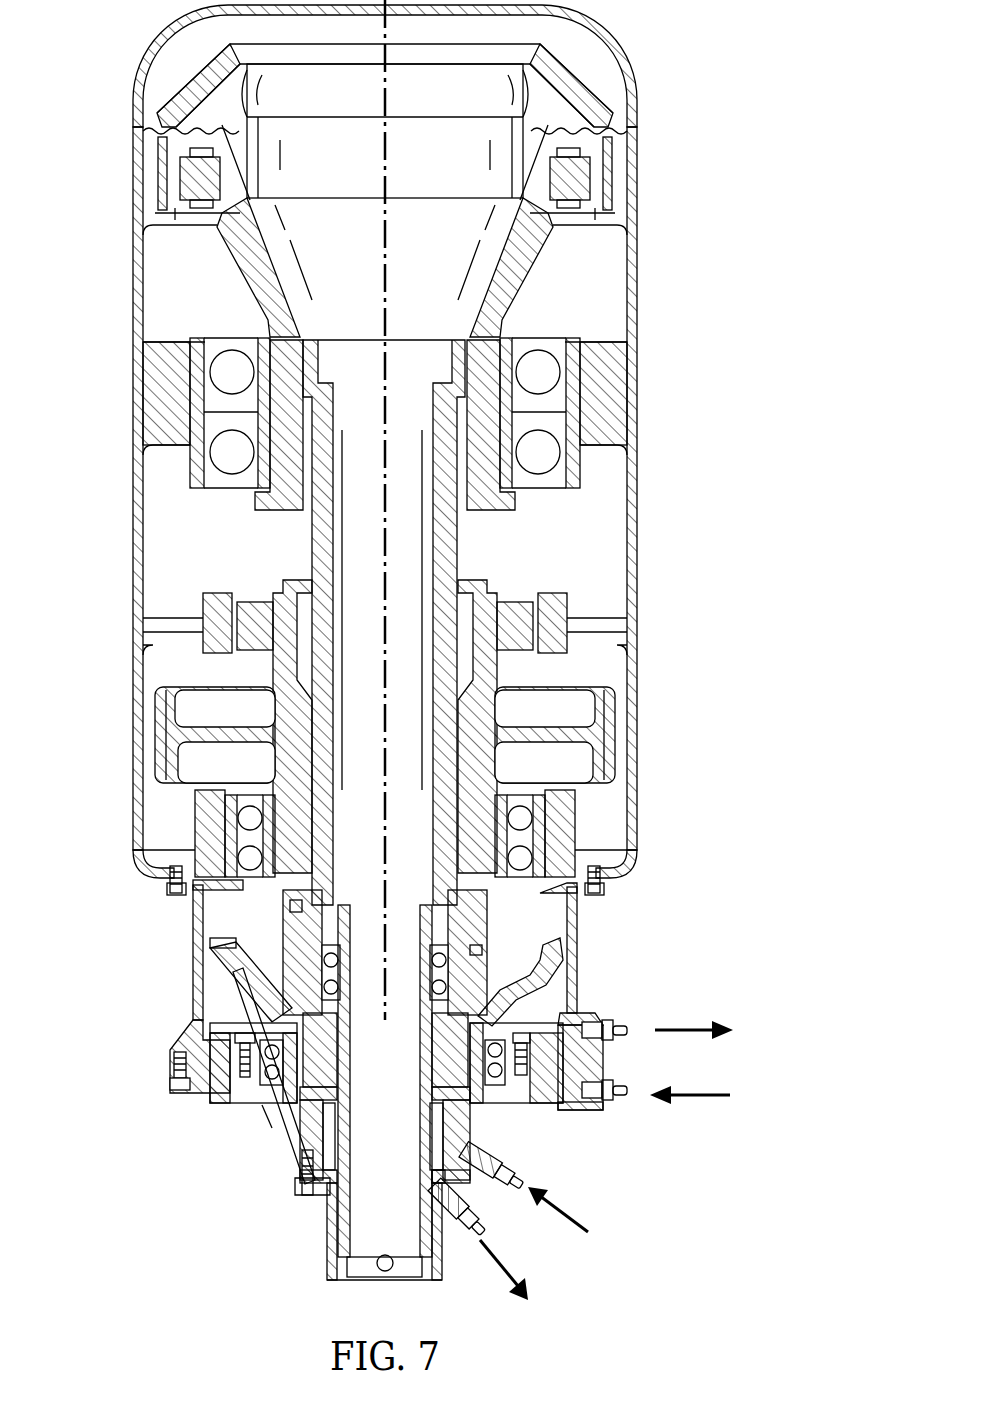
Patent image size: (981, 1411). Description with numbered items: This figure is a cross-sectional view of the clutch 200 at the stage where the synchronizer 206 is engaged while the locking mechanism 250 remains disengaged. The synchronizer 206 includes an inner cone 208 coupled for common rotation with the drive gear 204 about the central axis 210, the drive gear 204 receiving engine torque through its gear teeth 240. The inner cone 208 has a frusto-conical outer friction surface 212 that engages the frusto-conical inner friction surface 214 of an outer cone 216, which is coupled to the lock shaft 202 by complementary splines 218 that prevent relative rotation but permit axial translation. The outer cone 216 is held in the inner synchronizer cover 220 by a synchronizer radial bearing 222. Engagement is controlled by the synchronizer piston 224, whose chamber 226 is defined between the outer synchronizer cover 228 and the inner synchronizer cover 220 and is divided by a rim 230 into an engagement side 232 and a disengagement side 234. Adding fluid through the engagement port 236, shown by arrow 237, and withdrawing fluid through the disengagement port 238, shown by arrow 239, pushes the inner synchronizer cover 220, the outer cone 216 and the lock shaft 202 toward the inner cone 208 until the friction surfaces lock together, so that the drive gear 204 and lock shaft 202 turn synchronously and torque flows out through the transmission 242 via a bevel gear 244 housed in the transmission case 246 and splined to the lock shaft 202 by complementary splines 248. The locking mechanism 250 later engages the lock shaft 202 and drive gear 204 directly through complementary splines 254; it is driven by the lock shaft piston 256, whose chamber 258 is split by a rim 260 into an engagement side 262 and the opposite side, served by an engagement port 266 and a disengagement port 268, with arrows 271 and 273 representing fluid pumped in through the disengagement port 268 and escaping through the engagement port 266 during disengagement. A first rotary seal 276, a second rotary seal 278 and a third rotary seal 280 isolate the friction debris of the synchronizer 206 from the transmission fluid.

The clutch 200 is at (742, 92).
The lock shaft 202 is at (313, 549).
The drive gear 204 is at (168, 730).
The synchronizer 206 is at (198, 985).
The inner cone 208 is at (233, 935).
The central axis 210 is at (387, 158).
The frusto-conical outer friction surface 212 is at (214, 976).
The frusto-conical inner friction surface 214 is at (210, 950).
The outer cone 216 is at (238, 985).
The complementary splines 218 is at (265, 1118).
The inner synchronizer cover 220 is at (293, 1160).
The synchronizer radial bearing 222 is at (262, 1080).
The synchronizer piston 224 is at (638, 1074).
The chamber 226 is at (600, 1075).
The outer synchronizer cover 228 is at (578, 968).
The rim 230 is at (540, 1095).
The engagement side 232 is at (555, 1095).
The disengagement side 234 is at (598, 1060).
The engagement port 236 is at (600, 1108).
The arrow 237 is at (703, 1097).
The disengagement port 238 is at (615, 1026).
The arrow 239 is at (698, 1028).
The gear teeth 240 is at (612, 720).
The transmission 242 is at (584, 68).
The bevel gear 244 is at (510, 268).
The transmission case 246 is at (628, 190).
The complementary splines 248 is at (468, 400).
The locking mechanism 250 is at (328, 1255).
The complementary splines 254 is at (490, 790).
The lock shaft piston 256 is at (418, 1158).
The chamber 258 is at (430, 1140).
The rim 260 is at (438, 1115).
The engagement side 262 is at (432, 1178).
The engagement port 266 is at (455, 1228).
The disengagement port 268 is at (500, 1190).
The arrow 271 is at (582, 1234).
The arrow 273 is at (508, 1290).
The first rotary seal 276 is at (300, 905).
The second rotary seal 278 is at (470, 950).
The third rotary seal 280 is at (458, 1003).